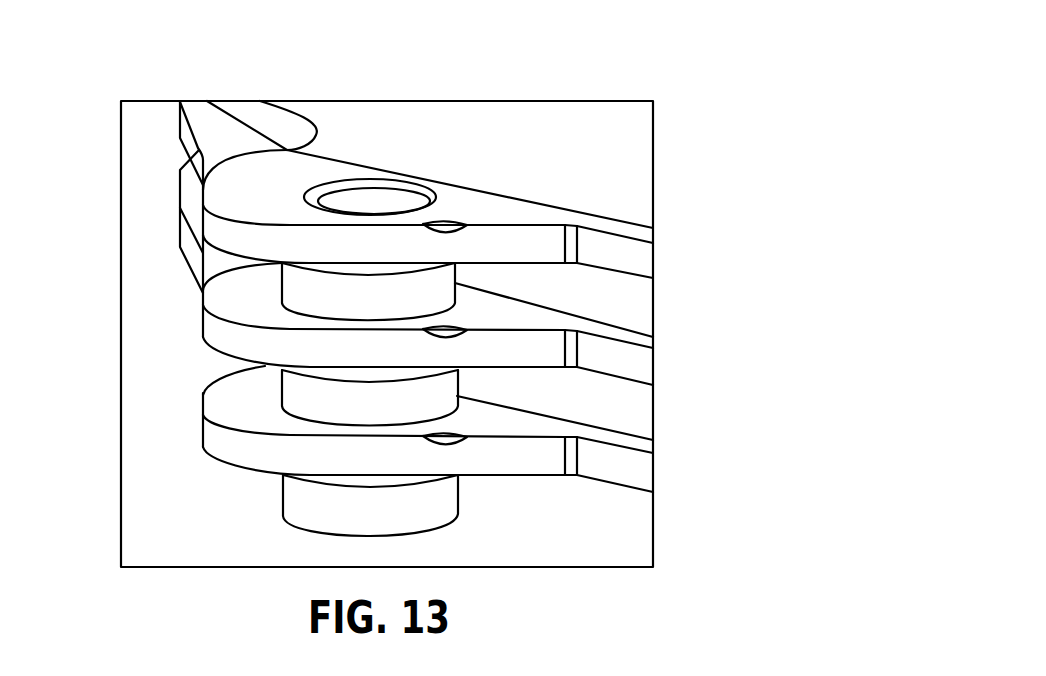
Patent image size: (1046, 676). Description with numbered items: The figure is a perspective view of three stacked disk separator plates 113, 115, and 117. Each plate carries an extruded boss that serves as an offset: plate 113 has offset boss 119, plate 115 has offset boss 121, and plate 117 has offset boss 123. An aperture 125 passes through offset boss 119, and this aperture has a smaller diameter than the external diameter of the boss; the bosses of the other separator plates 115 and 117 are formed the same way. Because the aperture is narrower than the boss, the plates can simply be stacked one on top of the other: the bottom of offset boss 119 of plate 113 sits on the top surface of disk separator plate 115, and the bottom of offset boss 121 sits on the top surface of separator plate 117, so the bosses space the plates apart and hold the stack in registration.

The separator plate 113 is at (605, 163).
The separator plate 115 is at (240, 302).
The separator plate 117 is at (240, 408).
The offset boss 119 is at (445, 283).
The offset boss 121 is at (445, 395).
The offset boss 123 is at (457, 503).
The aperture 125 is at (373, 197).